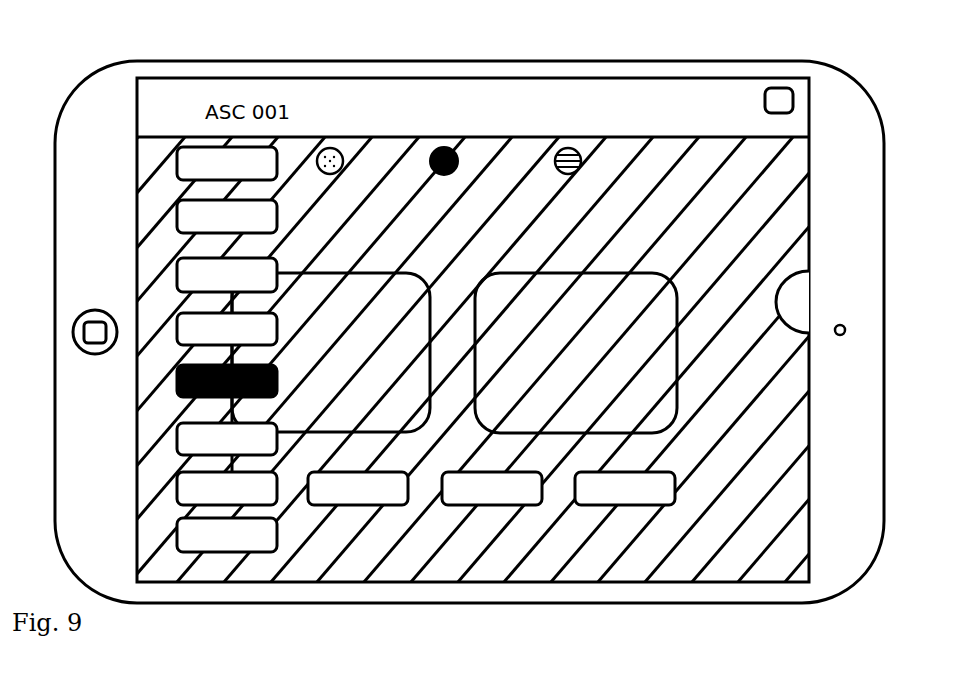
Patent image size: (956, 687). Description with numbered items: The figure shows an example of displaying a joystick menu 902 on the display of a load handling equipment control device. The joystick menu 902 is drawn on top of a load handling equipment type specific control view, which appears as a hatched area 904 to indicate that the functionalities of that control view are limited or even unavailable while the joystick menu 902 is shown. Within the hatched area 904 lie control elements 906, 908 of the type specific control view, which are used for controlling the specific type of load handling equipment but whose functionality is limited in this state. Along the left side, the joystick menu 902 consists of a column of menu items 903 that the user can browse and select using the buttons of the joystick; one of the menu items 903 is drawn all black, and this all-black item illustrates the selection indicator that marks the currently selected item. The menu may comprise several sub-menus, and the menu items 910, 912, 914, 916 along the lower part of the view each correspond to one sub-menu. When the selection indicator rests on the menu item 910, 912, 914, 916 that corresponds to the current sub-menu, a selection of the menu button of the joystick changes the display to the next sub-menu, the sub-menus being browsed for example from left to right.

The joystick menu 902 is at (195, 140).
The menu items 903 is at (163, 350).
The hatched area 904 is at (785, 158).
The control element 906 is at (331, 352).
The control element 908 is at (576, 353).
The menu item 910 is at (227, 491).
The menu item 912 is at (358, 491).
The menu item 914 is at (492, 491).
The menu item 916 is at (625, 491).